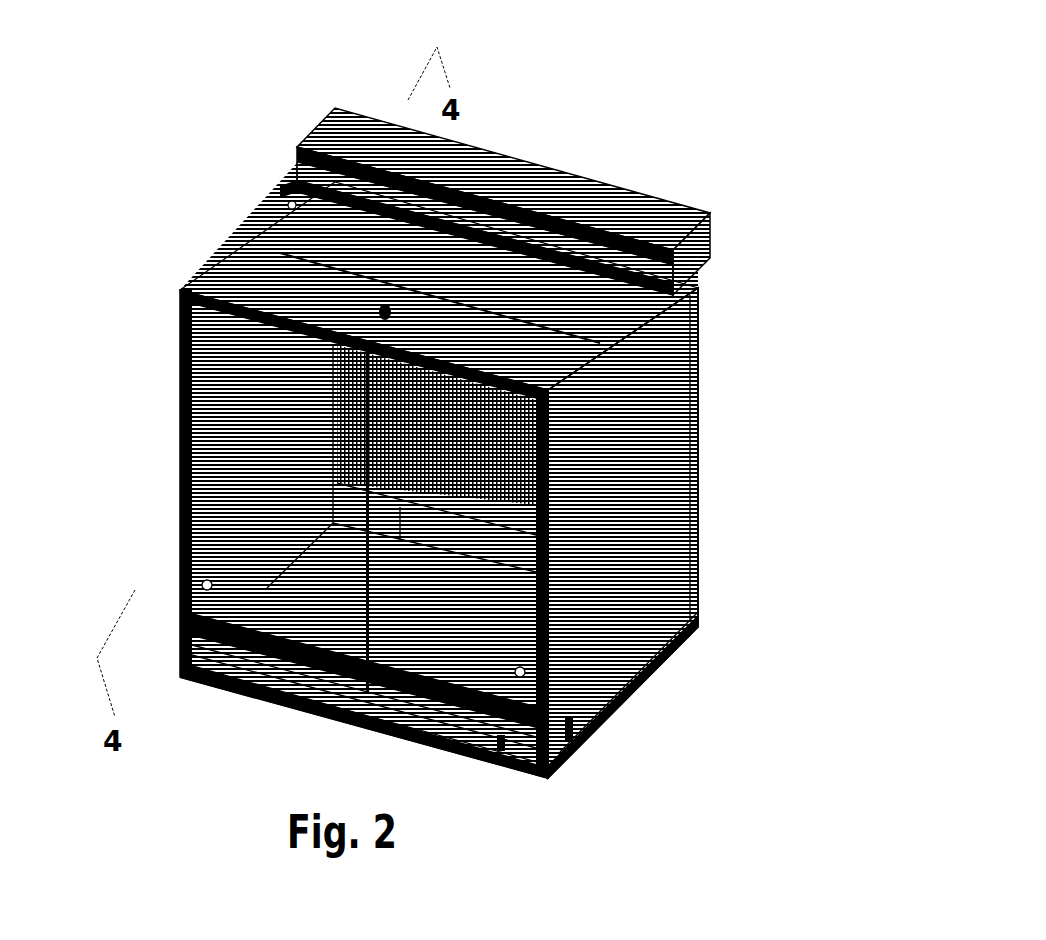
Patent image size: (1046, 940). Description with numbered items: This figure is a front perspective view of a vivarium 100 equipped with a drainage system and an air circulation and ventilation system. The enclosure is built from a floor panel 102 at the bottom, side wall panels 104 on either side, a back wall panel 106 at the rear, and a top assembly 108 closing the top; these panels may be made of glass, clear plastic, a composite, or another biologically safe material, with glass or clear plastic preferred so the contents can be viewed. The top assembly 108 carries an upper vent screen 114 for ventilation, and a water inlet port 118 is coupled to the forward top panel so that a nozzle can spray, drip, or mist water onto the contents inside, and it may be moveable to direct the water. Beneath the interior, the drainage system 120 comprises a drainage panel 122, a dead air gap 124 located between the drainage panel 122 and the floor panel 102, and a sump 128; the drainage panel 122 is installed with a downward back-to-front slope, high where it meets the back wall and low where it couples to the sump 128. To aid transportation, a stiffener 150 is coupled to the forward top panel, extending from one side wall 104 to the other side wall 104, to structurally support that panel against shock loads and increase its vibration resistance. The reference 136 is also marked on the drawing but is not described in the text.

The vivarium 100 is at (257, 128).
The floor panel 102 is at (643, 680).
The side wall panels 104 is at (647, 425).
The back wall panel 106 is at (713, 350).
The top assembly 108 is at (252, 185).
The upper vent screen 114 is at (492, 228).
The water inlet port 118 is at (215, 245).
The drainage system 120 is at (706, 580).
The drainage panel 122 is at (655, 632).
The dead air gap 124 is at (645, 655).
The sump 128 is at (548, 752).
The foot 136 is at (585, 728).
The stiffener 150 is at (378, 312).